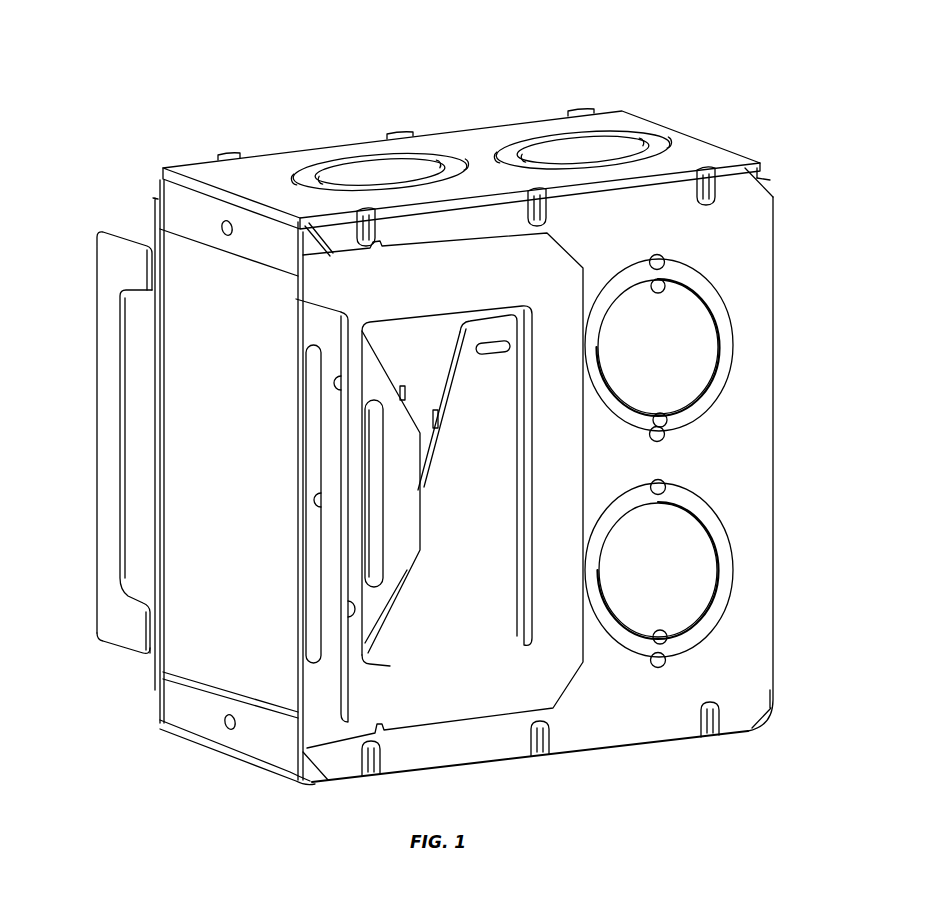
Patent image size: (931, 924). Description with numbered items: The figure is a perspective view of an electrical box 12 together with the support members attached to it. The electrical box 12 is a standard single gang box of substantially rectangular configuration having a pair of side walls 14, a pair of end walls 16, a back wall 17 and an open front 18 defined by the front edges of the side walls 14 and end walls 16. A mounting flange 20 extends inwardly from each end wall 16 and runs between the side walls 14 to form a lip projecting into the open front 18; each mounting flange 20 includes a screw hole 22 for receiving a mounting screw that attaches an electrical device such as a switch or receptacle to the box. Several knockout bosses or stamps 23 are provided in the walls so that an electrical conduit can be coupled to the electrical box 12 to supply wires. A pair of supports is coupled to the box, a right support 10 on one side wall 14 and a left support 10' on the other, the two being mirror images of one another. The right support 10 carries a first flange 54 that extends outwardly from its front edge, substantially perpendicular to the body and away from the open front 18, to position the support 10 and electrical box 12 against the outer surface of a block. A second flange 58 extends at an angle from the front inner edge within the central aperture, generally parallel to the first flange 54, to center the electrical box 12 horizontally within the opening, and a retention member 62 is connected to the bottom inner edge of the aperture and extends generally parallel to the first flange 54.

The support 10 is at (288, 305).
The left support 10' is at (106, 407).
The electrical box 12 is at (475, 90).
The side wall 14 is at (743, 431).
The end wall 16 is at (263, 170).
The back wall 17 is at (771, 179).
The open front 18 is at (165, 538).
The mounting flange 20 is at (194, 697).
The screw hole 22 is at (228, 238).
The knockout boss 23 is at (357, 175).
The first flange 54 is at (327, 517).
The second flange 58 is at (400, 507).
The retention member 62 is at (482, 379).